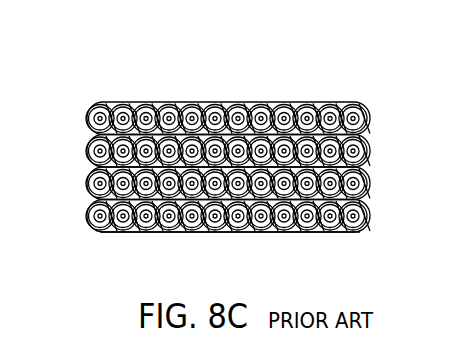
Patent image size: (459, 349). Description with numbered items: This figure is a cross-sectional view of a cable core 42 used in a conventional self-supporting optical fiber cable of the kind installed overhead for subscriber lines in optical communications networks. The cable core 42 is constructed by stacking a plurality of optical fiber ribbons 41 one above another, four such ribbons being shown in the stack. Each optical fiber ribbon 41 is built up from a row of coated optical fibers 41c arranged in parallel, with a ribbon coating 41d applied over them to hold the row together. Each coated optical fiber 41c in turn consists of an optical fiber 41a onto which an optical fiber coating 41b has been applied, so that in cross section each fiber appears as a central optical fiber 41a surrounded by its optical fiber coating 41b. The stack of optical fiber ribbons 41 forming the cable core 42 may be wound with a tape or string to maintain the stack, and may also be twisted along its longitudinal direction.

The optical fiber ribbon 41 is at (227, 8).
The optical fiber 41a is at (117, 102).
The optical fiber coating 41b is at (103, 101).
The coated optical fiber 41c is at (147, 22).
The ribbon coating 41d is at (150, 102).
The cable core 42 is at (132, 237).